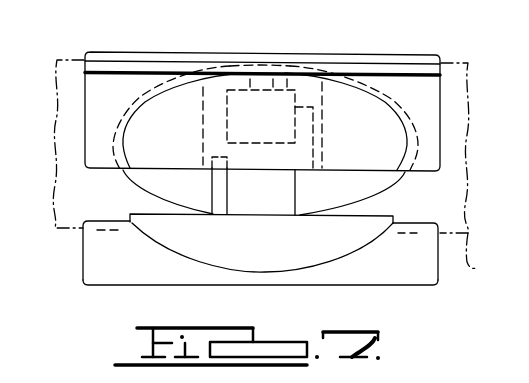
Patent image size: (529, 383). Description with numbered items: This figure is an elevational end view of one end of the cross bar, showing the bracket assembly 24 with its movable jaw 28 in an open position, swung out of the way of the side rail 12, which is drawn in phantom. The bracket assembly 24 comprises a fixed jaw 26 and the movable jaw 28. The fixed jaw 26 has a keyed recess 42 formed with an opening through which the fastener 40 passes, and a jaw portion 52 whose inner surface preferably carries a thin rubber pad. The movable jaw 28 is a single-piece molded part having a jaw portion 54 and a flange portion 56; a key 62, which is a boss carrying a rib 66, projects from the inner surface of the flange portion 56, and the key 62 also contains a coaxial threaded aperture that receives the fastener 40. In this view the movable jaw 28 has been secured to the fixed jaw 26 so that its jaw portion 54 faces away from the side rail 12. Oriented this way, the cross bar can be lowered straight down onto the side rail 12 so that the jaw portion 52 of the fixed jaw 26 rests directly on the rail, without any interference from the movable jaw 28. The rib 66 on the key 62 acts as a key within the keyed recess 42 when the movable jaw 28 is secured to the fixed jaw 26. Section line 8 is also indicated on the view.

The section line 8- 8 is at (117, 187).
The side rail 12 is at (279, 176).
The bracket assembly 24 is at (82, 46).
The fixed jaw 26 is at (438, 54).
The movable jaw 28 is at (122, 292).
The fastener 40 is at (268, 71).
The keyed recess 42 is at (201, 138).
The jaw portion 52 is at (107, 82).
The jaw portion 54 is at (100, 258).
The flange portion 56 is at (340, 243).
The key 62 is at (305, 194).
The rib 66 is at (220, 203).